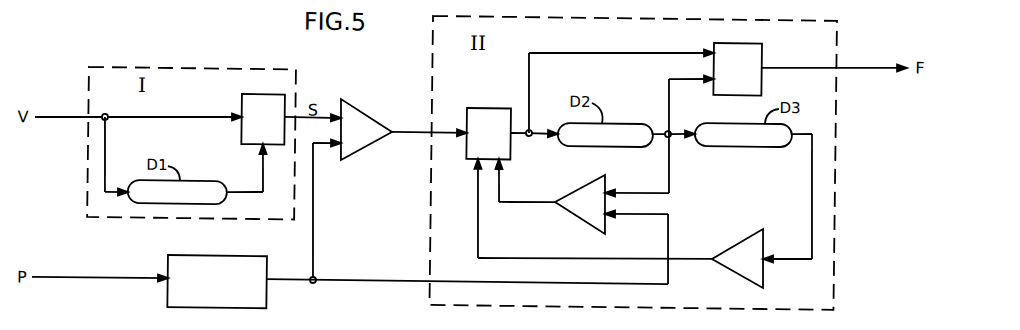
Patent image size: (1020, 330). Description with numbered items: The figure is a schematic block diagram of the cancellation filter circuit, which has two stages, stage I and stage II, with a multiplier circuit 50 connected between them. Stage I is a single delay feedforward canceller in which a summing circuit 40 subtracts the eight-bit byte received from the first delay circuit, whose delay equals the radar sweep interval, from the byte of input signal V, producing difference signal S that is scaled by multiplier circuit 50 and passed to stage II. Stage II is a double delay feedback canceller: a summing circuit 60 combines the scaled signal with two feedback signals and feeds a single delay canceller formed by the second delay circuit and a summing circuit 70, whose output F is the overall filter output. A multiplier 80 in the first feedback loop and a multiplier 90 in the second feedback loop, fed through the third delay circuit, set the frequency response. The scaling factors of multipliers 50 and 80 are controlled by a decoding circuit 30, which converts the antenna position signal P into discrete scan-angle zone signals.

The decoding circuit 30 is at (195, 259).
The summing circuit 40 is at (246, 97).
The multiplier circuit 50 is at (366, 114).
The summing circuit 60 is at (498, 108).
The summing circuit 70 is at (718, 40).
The multiplier 80 is at (576, 218).
The multiplier 90 is at (739, 240).